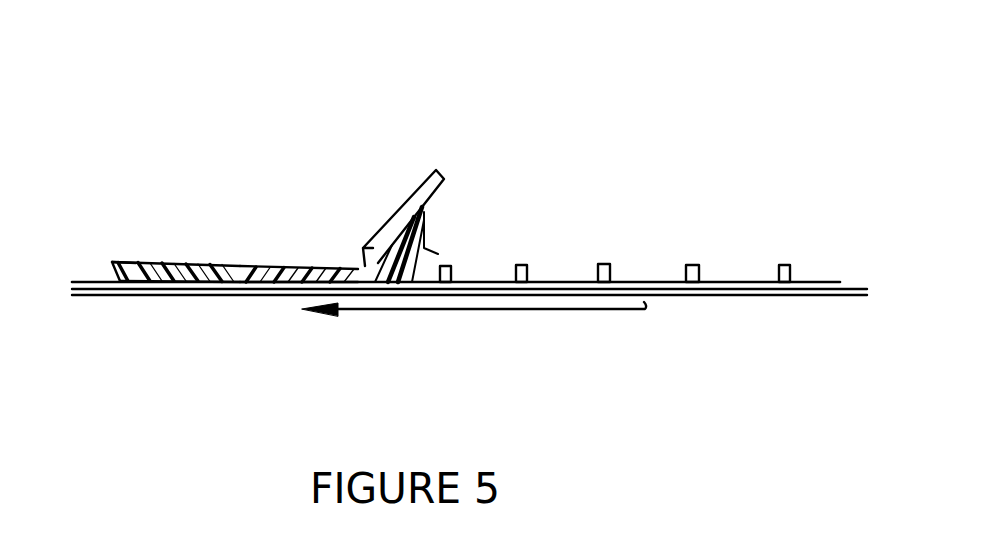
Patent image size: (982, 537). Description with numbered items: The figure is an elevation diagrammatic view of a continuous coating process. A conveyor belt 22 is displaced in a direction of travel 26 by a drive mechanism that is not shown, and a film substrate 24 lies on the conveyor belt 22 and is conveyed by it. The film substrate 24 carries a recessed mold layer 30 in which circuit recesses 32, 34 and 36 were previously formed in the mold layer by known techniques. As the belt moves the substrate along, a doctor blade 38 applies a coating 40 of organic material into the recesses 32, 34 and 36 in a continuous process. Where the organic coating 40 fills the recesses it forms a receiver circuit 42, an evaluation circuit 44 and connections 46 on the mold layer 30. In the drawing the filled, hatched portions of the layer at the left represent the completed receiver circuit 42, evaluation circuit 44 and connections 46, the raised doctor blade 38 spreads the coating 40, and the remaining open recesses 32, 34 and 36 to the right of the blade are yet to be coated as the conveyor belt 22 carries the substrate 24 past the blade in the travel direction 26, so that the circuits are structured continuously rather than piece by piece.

The conveyor belt 22 is at (226, 297).
The film substrate 24 is at (821, 281).
The direction of travel 26 is at (577, 307).
The recessed mold layer 30 is at (608, 262).
The circuit recess 32 is at (556, 272).
The circuit recess 34 is at (648, 270).
The circuit recess 36 is at (733, 270).
The doctor blade 38 is at (407, 208).
The coating 40 is at (444, 264).
The receiver circuit 42 is at (133, 262).
The evaluation circuit 44 is at (320, 268).
The connections 46 is at (228, 263).